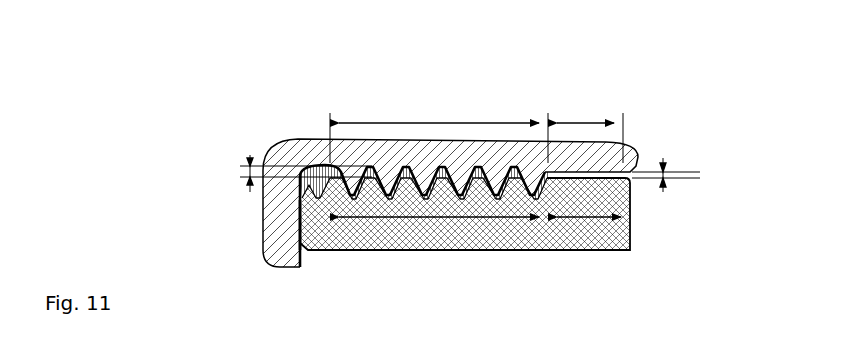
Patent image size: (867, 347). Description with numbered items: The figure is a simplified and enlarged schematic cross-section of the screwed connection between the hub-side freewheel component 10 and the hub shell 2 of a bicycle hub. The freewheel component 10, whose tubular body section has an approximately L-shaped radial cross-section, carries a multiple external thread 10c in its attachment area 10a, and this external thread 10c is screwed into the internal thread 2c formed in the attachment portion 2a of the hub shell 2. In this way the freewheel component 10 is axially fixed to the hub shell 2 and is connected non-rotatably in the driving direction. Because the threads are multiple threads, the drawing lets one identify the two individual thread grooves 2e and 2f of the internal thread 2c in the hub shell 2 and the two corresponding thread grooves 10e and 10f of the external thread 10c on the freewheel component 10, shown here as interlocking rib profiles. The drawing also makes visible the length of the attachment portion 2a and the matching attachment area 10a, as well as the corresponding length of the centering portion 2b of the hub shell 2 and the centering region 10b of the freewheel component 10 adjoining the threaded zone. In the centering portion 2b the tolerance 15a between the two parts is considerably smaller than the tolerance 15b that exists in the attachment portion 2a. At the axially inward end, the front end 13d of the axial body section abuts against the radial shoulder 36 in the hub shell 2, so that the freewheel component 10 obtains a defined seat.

The hub shell 2 is at (643, 157).
The attachment portion 2a is at (462, 123).
The centering portion 2b is at (628, 157).
The internal thread 2c is at (427, 196).
The thread groove 2e is at (390, 173).
The thread groove 2f is at (418, 172).
The hub-side freewheel component 10 is at (620, 242).
The attachment area 10a is at (486, 210).
The centering region 10b is at (595, 179).
The external thread 10c is at (396, 200).
The thread groove 10e is at (321, 182).
The thread groove 10f is at (355, 185).
The front end 13d is at (302, 228).
The tolerance 15a is at (250, 173).
The tolerance 15b is at (670, 177).
The radial shoulder 36 is at (300, 240).